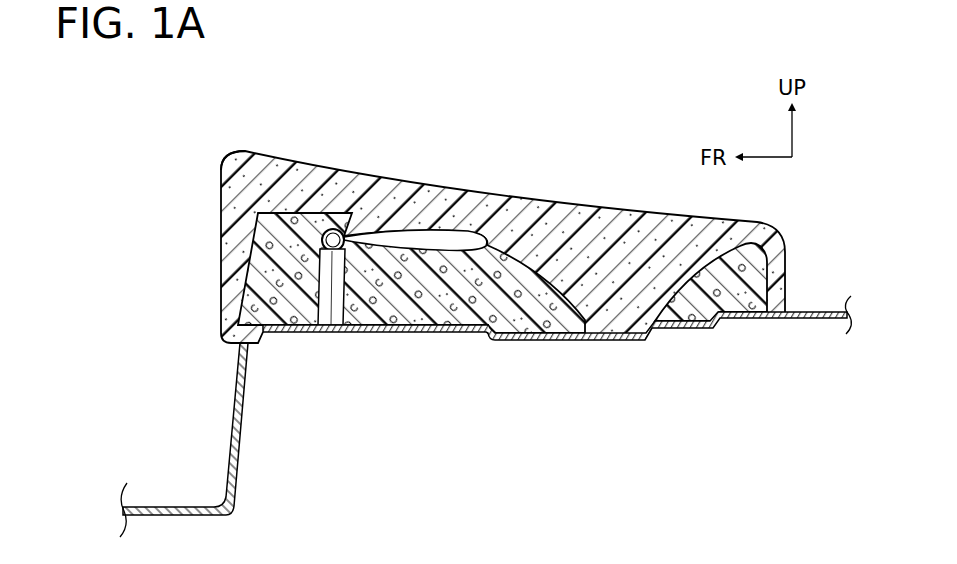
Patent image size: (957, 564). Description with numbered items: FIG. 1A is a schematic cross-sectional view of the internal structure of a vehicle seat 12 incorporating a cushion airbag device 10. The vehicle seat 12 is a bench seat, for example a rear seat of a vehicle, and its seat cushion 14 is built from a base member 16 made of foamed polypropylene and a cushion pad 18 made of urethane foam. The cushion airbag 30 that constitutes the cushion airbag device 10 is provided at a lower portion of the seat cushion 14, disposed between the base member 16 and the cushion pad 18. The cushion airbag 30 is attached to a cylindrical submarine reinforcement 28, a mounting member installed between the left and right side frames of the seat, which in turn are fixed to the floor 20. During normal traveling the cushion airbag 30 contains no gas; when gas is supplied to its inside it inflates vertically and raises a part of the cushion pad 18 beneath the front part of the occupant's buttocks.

The cushion airbag device 10 is at (576, 184).
The vehicle seat 12 is at (220, 155).
The seat cushion 14 is at (330, 156).
The base member 16 is at (292, 320).
The cushion pad 18 is at (606, 334).
The floor 20 is at (233, 417).
The submarine reinforcement 28 is at (336, 323).
The cushion airbag 30 is at (470, 232).